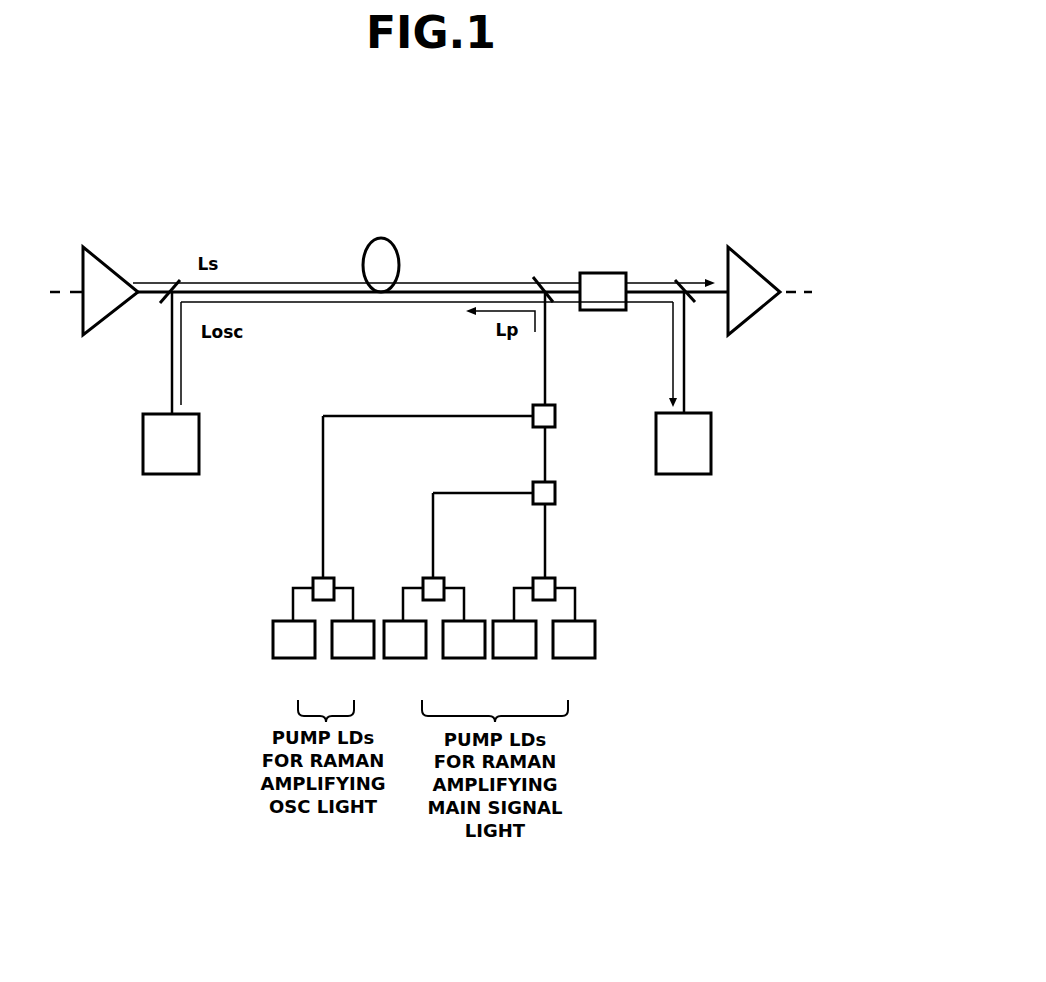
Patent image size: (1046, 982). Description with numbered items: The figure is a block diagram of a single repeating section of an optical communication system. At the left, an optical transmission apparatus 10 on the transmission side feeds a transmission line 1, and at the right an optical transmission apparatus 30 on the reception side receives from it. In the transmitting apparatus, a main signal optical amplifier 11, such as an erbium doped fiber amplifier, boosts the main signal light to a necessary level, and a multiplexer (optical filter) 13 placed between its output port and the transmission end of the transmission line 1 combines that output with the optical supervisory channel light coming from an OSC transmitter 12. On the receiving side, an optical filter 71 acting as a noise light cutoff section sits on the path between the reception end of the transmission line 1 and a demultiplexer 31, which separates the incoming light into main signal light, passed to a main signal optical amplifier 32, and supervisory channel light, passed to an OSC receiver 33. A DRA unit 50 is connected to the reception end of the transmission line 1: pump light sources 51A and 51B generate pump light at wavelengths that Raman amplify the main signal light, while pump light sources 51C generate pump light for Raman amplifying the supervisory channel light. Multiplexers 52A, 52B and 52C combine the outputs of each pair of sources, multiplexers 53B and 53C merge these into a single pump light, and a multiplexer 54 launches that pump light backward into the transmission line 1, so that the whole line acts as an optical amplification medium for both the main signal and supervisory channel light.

The transmission line 1 is at (380, 238).
The optical transmission apparatus on the transmission side 10 is at (123, 184).
The main signal optical amplifier 11 is at (103, 258).
The OSC transmitter 12 is at (151, 413).
The multiplexer (optical filter) 13 is at (172, 281).
The optical transmission apparatus on the reception side 30 is at (719, 182).
The demultiplexer 31 is at (688, 282).
The main signal optical amplifier 32 is at (757, 257).
The OSC receiver 33 is at (703, 412).
The DRA unit 50 is at (653, 746).
The pump light sources 51A is at (520, 658).
The pump light sources 51B is at (410, 658).
The pump light sources 51C is at (300, 658).
The multiplexer 52A is at (537, 578).
The multiplexer 52B is at (426, 578).
The multiplexer 52C is at (316, 578).
The multiplexer 53B is at (538, 481).
The multiplexer 53C is at (538, 404).
The multiplexer 54 is at (540, 281).
The optical filter 71 is at (603, 272).